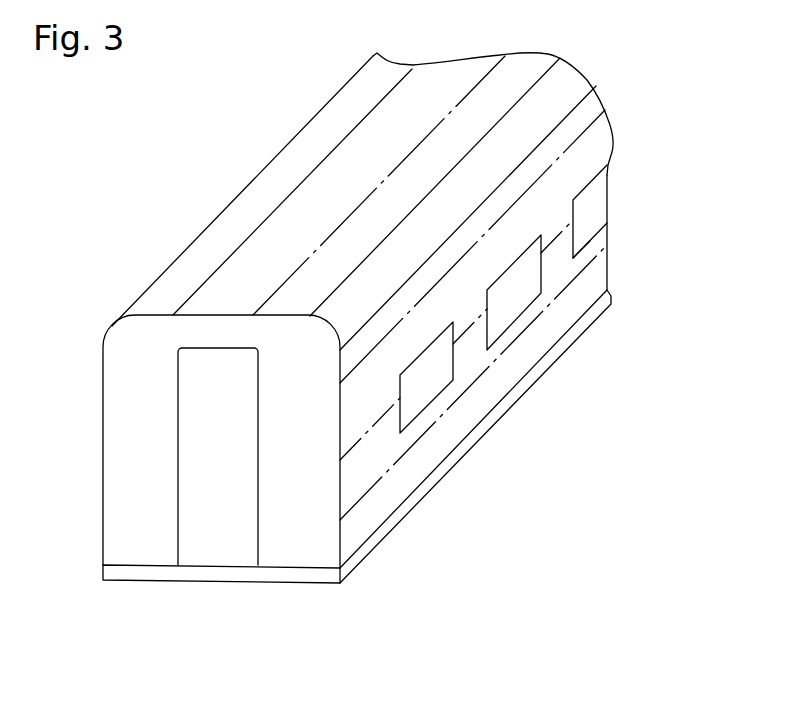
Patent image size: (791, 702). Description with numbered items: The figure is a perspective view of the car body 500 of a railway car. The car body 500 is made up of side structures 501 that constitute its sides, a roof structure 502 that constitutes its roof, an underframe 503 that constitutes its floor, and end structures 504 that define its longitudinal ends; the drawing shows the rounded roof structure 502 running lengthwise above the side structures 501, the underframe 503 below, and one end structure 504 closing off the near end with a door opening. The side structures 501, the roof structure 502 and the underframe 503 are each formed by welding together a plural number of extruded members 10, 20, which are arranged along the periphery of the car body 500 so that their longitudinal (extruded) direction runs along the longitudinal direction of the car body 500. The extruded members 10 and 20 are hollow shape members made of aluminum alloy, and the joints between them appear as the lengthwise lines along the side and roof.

The car body 500 is at (379, 350).
The side structures 501 is at (513, 315).
The roof structure 502 is at (303, 166).
The underframe 503 is at (388, 530).
The end structures 504 is at (301, 532).
The extruded member 10 is at (592, 250).
The extruded member 20 is at (600, 284).